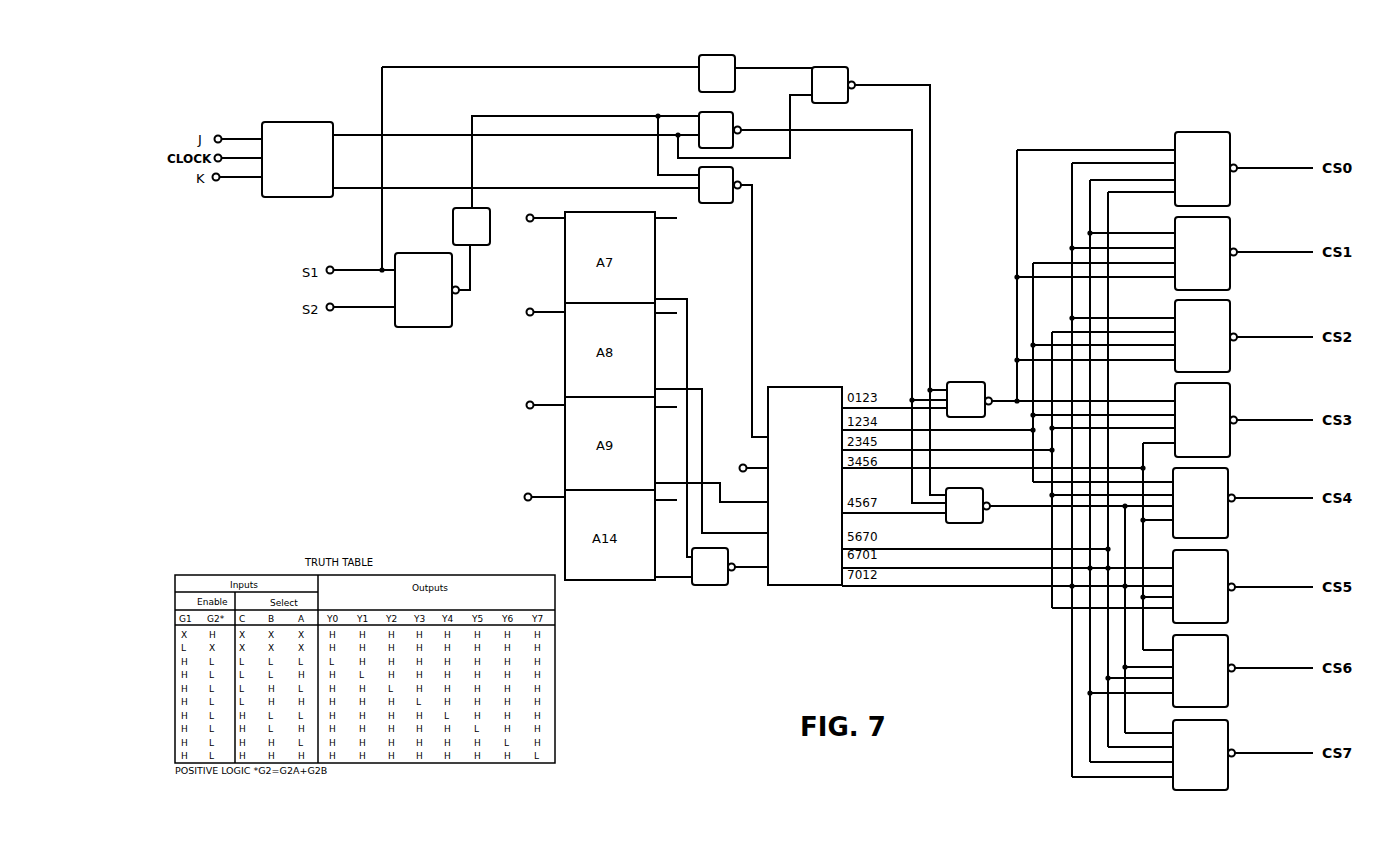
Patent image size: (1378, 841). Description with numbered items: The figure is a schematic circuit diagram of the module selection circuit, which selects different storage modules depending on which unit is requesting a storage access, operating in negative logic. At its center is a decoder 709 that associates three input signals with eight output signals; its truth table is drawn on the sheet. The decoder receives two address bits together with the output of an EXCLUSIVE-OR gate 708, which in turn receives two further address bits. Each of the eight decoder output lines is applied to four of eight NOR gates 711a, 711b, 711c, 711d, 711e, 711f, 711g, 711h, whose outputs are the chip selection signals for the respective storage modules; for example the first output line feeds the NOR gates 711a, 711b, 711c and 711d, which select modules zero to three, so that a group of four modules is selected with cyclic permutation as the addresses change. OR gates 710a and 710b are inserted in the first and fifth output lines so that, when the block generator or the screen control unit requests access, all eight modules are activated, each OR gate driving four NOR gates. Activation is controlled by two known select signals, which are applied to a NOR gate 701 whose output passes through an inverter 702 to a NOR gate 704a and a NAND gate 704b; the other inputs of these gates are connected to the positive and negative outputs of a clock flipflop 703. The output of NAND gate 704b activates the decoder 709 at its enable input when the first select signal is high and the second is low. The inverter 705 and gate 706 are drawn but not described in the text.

The NOR gate 701 is at (425, 253).
The inverter 702 is at (488, 221).
The clock flipflop 703 is at (320, 121).
The NOR gate 704a is at (734, 117).
The NAND gate 704b is at (734, 172).
The inverter 705 is at (735, 66).
The OR gate 706 is at (848, 73).
The EXCLUSIVE-OR gate 708 is at (709, 586).
The decoder 709 is at (821, 390).
The OR gate 710a is at (968, 382).
The OR gate 710b is at (978, 491).
The NOR gate 711a is at (1244, 169).
The NOR gate 711b is at (1244, 253).
The NOR gate 711c is at (1244, 336).
The NOR gate 711d is at (1244, 420).
The NOR gate 711e is at (1243, 503).
The NOR gate 711f is at (1243, 586).
The NOR gate 711g is at (1243, 671).
The NOR gate 711h is at (1243, 755).